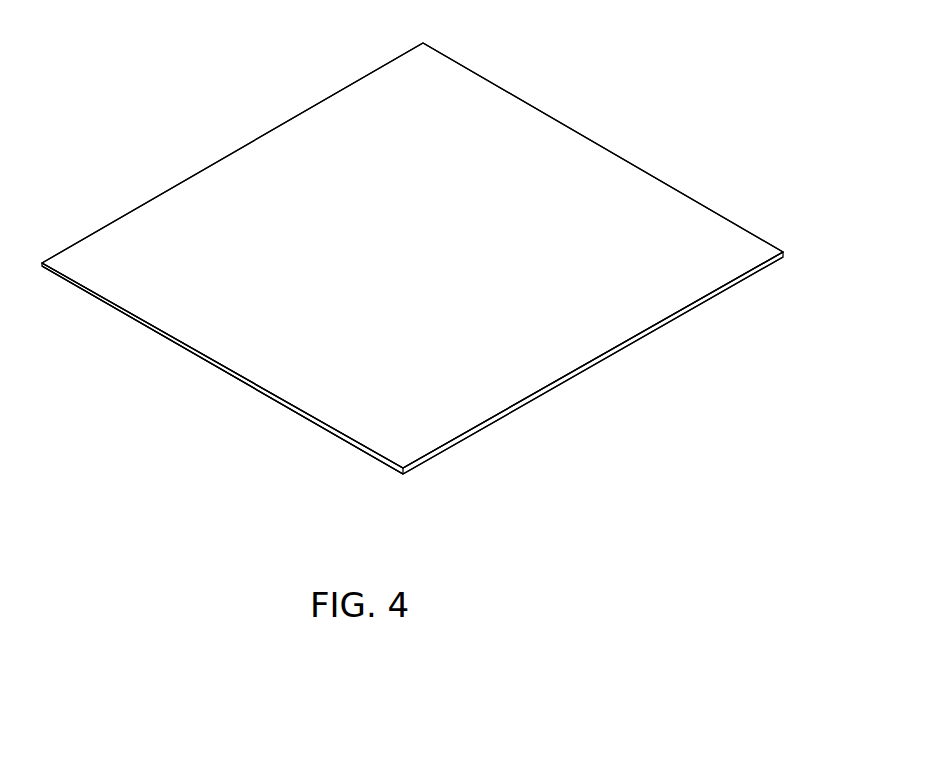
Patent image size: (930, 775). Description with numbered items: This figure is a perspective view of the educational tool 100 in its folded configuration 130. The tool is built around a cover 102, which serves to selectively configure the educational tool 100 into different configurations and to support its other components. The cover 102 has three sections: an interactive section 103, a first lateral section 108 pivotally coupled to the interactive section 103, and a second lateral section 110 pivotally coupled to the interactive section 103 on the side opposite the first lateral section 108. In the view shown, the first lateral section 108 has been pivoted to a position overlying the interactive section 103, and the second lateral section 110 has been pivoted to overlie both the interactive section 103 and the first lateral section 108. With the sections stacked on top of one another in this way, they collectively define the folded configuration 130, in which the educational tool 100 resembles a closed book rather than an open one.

The educational tool 100 is at (140, 167).
The folded configuration 130 is at (217, 115).
The cover 102 is at (144, 386).
The interactive section 103 is at (297, 412).
The second lateral section 110 is at (347, 442).
The first lateral section 108 is at (485, 412).